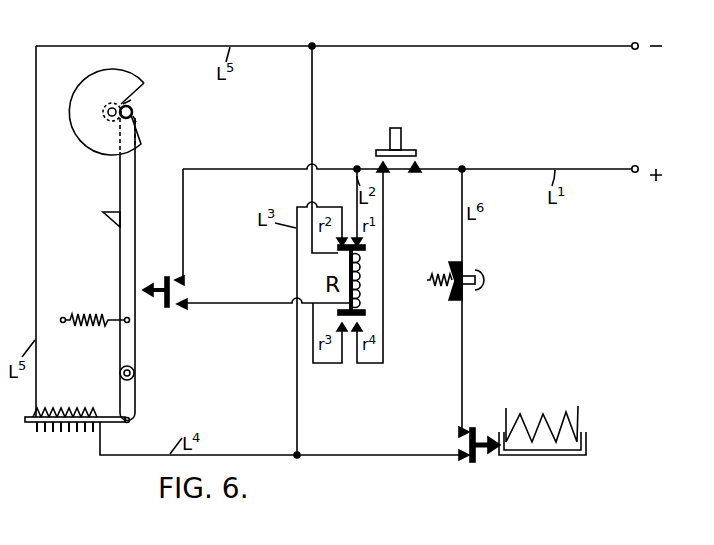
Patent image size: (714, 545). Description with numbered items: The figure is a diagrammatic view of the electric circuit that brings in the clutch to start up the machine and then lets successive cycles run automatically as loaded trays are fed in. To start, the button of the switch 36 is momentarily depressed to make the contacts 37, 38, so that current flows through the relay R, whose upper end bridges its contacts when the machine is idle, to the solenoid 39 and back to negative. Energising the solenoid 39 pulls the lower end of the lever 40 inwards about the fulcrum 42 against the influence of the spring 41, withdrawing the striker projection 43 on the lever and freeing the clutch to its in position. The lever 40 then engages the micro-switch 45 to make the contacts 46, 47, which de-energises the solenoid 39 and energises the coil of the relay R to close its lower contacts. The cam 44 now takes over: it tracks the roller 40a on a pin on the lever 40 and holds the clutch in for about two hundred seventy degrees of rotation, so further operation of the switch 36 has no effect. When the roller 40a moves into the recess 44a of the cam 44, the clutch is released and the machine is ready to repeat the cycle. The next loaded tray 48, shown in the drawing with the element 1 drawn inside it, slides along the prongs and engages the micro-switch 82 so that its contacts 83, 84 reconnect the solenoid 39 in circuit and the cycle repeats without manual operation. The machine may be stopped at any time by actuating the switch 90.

The heating element 1 is at (508, 408).
The switch 36 is at (407, 140).
The contact 37 is at (386, 175).
The contact 38 is at (418, 175).
The solenoid 39 is at (65, 425).
The lever 40 is at (135, 249).
The roller 40a is at (134, 116).
The spring 41 is at (94, 325).
The fulcrum 42 is at (134, 373).
The striker projection 43 is at (103, 222).
The cam 44 is at (101, 91).
The recess 44a is at (133, 106).
The micro-switch 45 is at (154, 303).
The contact 46 is at (186, 307).
The contact 47 is at (186, 282).
The loaded tray 48 is at (584, 445).
The micro-switch 82 is at (483, 453).
The micro-switch contact 83 is at (460, 432).
The micro-switch contact 84 is at (460, 457).
The switch 90 is at (468, 280).